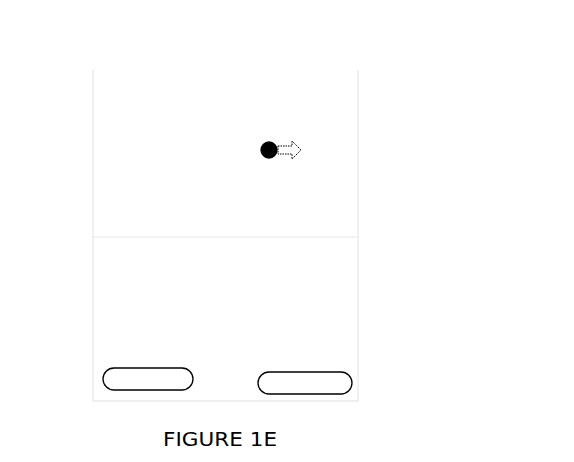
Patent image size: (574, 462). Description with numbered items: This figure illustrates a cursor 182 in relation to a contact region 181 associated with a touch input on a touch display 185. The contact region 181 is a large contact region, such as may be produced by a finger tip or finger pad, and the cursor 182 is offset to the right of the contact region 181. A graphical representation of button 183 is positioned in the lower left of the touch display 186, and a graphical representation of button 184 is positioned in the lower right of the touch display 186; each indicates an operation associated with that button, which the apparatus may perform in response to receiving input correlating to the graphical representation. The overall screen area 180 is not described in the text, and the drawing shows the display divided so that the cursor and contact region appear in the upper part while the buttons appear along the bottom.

The display screen / user interface 180 is at (275, 235).
The contact region 181 is at (272, 162).
The cursor 182 is at (292, 142).
The graphical representation of button 183 is at (101, 379).
The graphical representation of button 184 is at (349, 397).
The touch display 185 is at (361, 164).
The touch display 186 is at (361, 268).